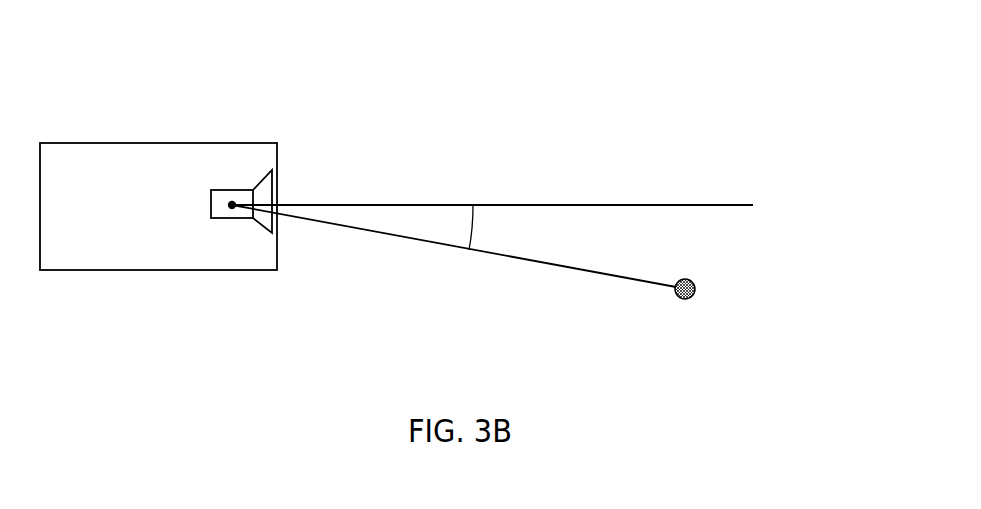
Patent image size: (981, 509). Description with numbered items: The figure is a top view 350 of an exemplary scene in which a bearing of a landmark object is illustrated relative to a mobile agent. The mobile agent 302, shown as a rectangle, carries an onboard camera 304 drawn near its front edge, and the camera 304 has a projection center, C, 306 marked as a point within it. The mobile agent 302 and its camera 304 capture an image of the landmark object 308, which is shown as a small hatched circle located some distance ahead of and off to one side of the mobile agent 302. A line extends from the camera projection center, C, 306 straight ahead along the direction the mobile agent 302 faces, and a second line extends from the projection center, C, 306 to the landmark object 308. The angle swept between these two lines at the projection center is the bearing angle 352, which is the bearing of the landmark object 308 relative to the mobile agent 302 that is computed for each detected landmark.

The mobile agent 302 is at (102, 141).
The onboard camera 304 is at (220, 188).
The camera projection center C 306 is at (233, 211).
The landmark object 308 is at (702, 289).
The top view 350 is at (746, 42).
The bearing angle 352 is at (474, 236).